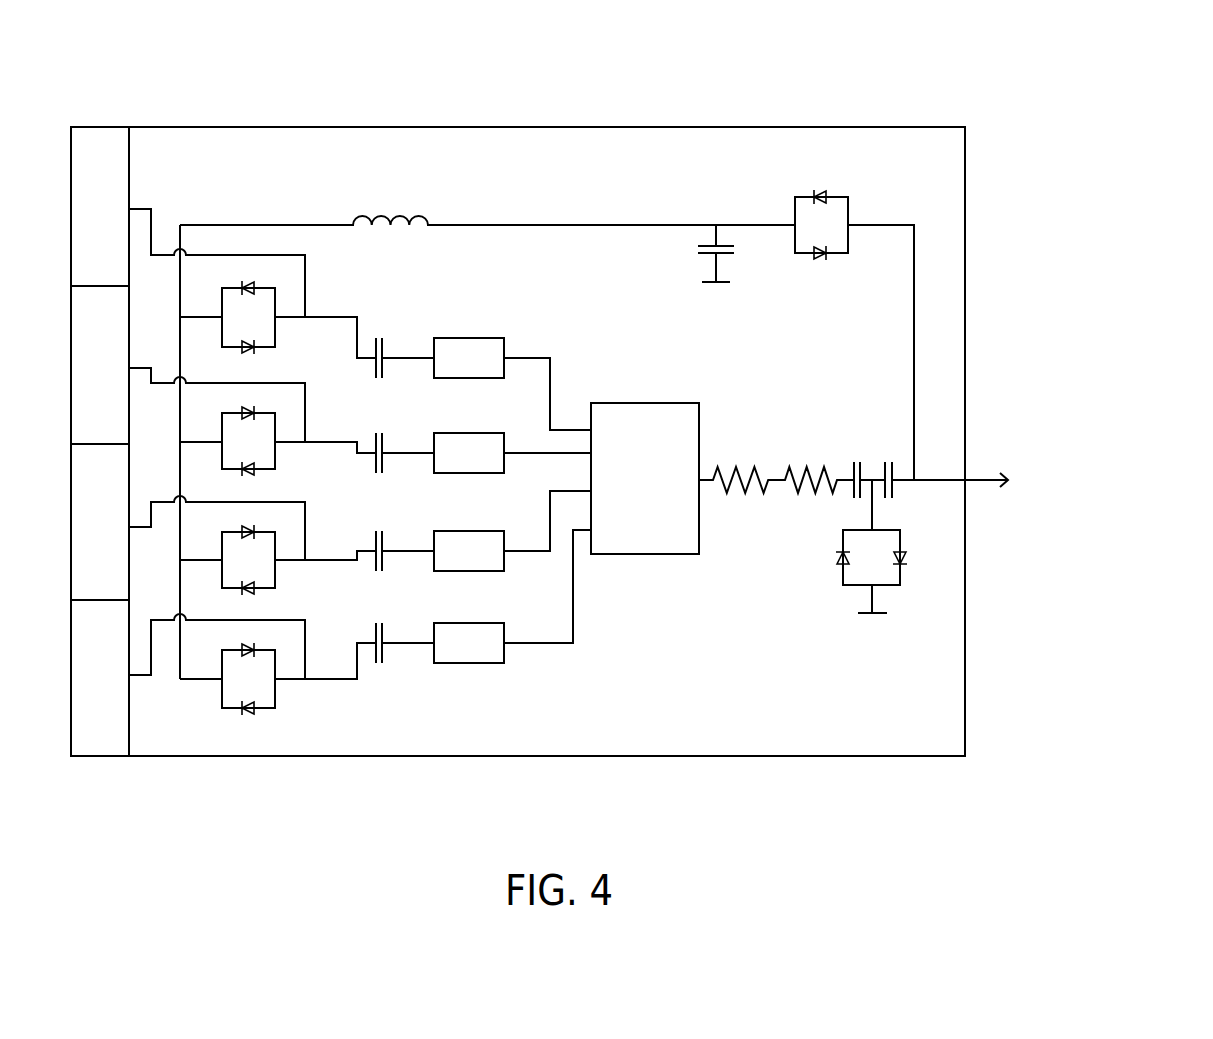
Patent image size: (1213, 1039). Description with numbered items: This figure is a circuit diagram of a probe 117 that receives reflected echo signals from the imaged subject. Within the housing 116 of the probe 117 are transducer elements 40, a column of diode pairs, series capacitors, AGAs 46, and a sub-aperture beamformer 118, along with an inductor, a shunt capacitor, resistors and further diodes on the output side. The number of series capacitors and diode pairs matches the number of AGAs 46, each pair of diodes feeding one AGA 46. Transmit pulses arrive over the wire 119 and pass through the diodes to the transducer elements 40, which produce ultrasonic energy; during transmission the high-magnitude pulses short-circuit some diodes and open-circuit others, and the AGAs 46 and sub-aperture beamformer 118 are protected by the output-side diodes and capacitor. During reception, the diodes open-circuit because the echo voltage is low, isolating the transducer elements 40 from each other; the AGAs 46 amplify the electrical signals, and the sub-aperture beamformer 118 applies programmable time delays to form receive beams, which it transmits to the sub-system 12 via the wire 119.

The sub-system 12 is at (1103, 496).
The transducer elements 40 is at (100, 138).
The AGAs 46 is at (462, 340).
The housing 116 is at (623, 127).
The probe 117 is at (580, 66).
The sub-aperture beamformer 118 is at (646, 403).
The wire 119 is at (985, 481).